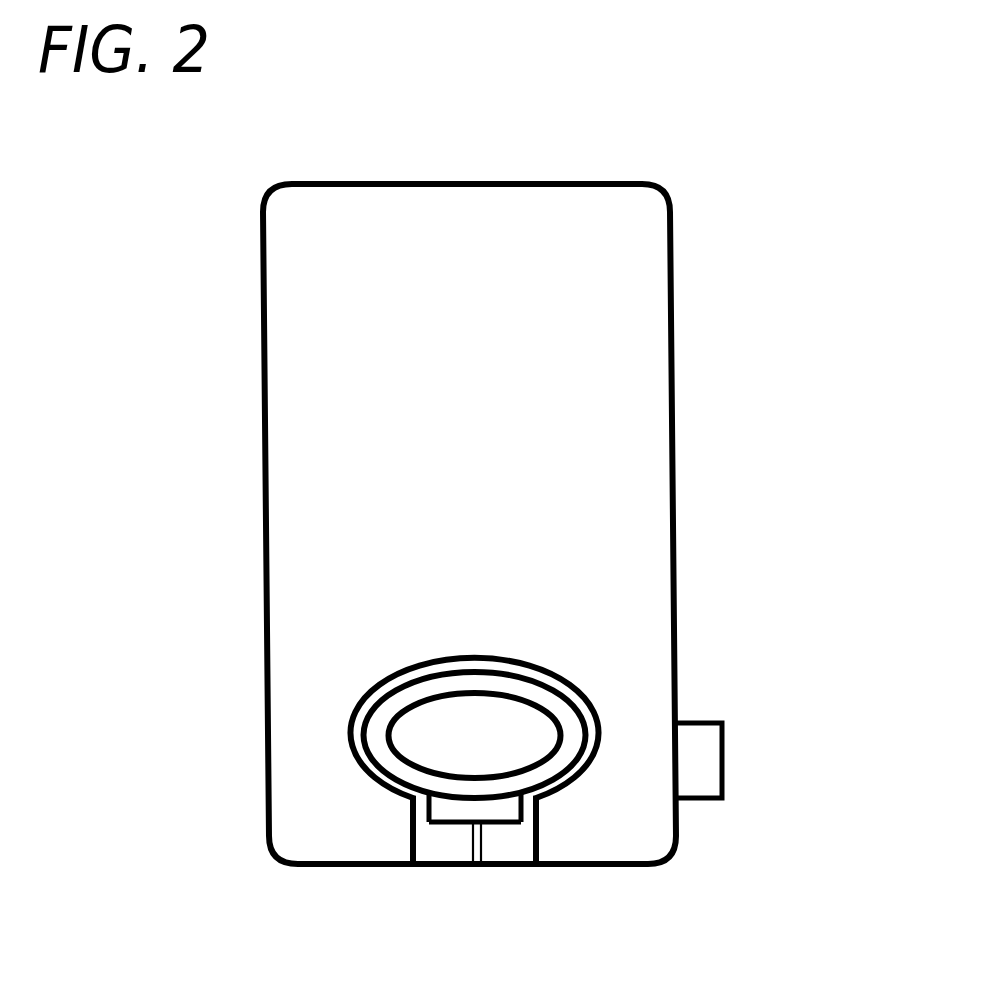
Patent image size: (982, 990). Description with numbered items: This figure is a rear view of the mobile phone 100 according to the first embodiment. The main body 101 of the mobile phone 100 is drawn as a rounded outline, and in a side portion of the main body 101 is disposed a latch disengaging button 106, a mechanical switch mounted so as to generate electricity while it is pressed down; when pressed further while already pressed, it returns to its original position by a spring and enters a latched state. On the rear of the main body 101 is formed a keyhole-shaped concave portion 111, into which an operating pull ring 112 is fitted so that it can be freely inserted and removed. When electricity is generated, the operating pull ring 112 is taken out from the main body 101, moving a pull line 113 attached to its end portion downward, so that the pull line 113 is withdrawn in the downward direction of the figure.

The mobile phone 100 is at (508, 570).
The main body 101 is at (263, 392).
The latch disengaging button 106 is at (724, 755).
The keyhole-shaped concave portion 111 is at (553, 675).
The operating pull ring 112 is at (457, 683).
The pull line 113 is at (480, 840).